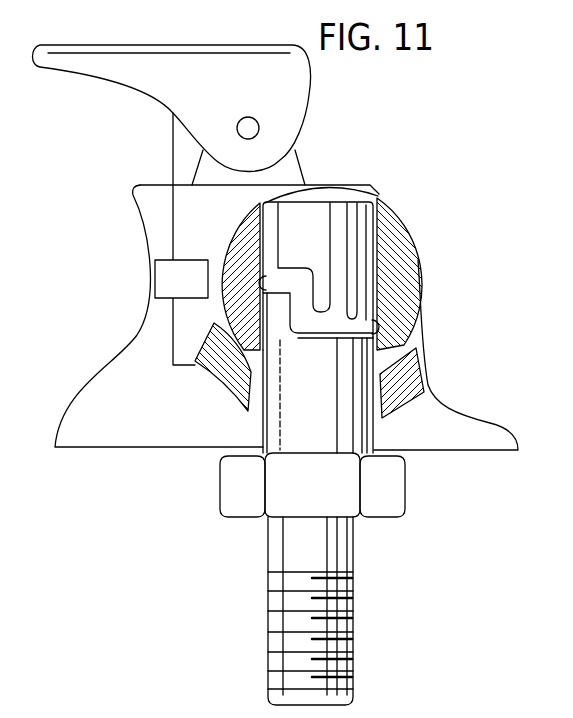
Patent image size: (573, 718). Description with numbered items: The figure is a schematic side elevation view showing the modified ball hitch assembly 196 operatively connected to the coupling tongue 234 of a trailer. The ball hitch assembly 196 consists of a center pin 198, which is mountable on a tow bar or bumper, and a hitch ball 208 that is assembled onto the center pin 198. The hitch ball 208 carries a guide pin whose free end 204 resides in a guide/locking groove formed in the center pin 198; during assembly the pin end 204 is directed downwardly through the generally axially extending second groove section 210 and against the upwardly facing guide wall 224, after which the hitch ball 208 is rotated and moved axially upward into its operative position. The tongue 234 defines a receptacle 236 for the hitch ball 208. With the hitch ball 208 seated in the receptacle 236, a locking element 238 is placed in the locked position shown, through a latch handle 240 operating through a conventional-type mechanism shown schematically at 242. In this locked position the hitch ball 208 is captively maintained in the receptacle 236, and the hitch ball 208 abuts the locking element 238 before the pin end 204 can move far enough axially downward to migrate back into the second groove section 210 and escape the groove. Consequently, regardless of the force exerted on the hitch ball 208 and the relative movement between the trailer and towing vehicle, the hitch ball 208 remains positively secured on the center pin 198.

The ball hitch assembly 196 is at (215, 224).
The center pin 198 is at (355, 427).
The free end of guide pin 204 is at (268, 274).
The hitch ball 208 is at (397, 257).
The second groove section 210 is at (352, 213).
The guide wall 224 is at (293, 340).
The coupling tongue 234 is at (167, 427).
The receptacle 236 is at (418, 337).
The locking element 238 is at (215, 376).
The latch handle 240 is at (153, 68).
The mechanism 242 is at (181, 279).